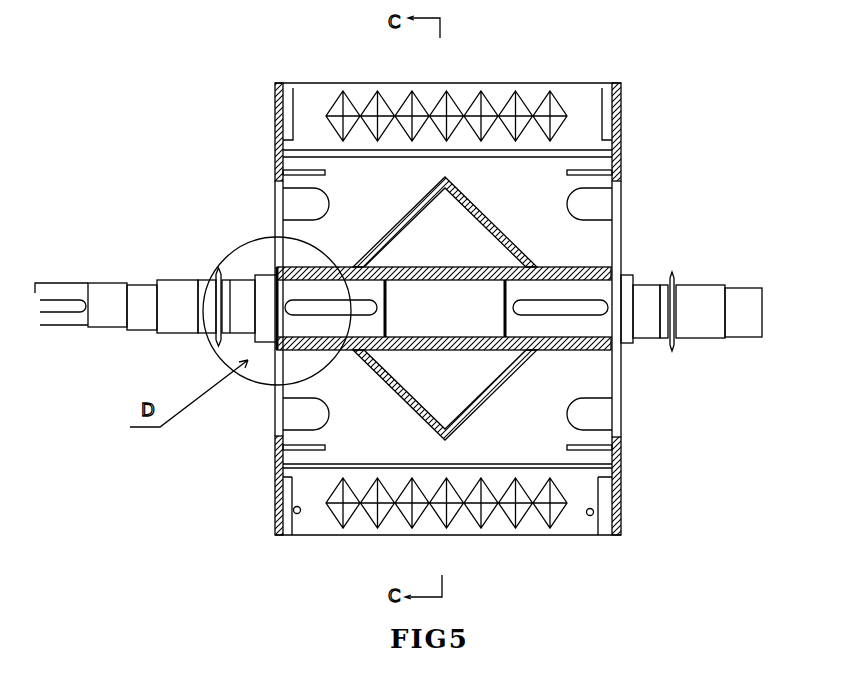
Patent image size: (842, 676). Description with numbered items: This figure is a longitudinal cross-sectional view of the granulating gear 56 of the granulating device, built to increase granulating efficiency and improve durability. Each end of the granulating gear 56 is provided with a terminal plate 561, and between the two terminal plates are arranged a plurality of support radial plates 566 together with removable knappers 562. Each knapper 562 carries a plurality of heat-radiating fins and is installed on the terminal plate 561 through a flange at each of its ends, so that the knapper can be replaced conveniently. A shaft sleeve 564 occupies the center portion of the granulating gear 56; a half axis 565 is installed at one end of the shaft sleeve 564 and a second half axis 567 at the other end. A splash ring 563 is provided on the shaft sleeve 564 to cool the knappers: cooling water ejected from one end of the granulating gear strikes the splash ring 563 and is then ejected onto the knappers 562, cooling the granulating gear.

The granulating gear 56 is at (642, 90).
The terminal plate 561 is at (283, 82).
The knapper 562 is at (397, 97).
The splash ring 563 is at (380, 232).
The shaft sleeve 564 is at (265, 283).
The half axis 565 is at (145, 298).
The support radial plate 566 is at (590, 237).
The half axis 567 is at (700, 296).